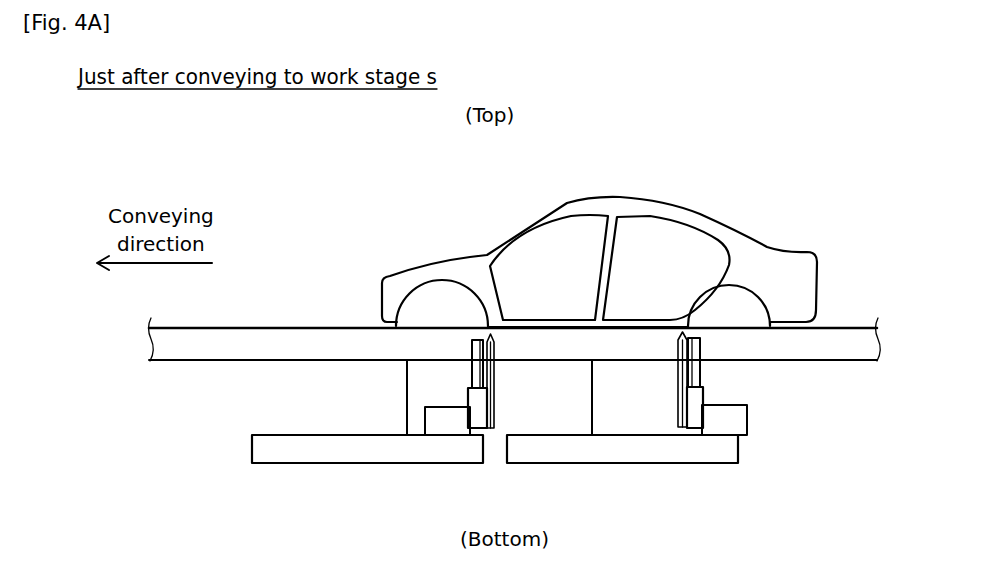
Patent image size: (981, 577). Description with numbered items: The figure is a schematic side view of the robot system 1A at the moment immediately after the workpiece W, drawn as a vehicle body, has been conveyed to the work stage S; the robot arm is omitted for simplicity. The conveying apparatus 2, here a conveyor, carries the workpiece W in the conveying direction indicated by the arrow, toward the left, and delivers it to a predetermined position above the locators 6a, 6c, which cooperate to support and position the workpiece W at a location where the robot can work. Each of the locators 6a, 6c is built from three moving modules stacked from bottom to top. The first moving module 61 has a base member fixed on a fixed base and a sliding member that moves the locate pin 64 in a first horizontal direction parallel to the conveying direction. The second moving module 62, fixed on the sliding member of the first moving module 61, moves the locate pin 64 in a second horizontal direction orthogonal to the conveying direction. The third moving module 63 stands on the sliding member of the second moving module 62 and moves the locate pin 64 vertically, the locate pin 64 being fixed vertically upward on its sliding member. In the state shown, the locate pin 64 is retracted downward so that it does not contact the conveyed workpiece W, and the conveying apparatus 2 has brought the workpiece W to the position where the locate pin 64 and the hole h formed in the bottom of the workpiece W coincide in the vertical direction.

The robot system 1A is at (806, 102).
The workpiece W is at (748, 231).
The hole h is at (490, 332).
The work stage S is at (273, 148).
The conveying apparatus 2 is at (151, 362).
The first moving module 61 is at (252, 446).
The second moving module 62 is at (417, 427).
The third moving module 63 is at (487, 432).
The locate pin 64 is at (487, 333).
The first positioning unit (jig 6) 6a is at (287, 465).
The third positioning unit (jig 6) 6c is at (719, 467).